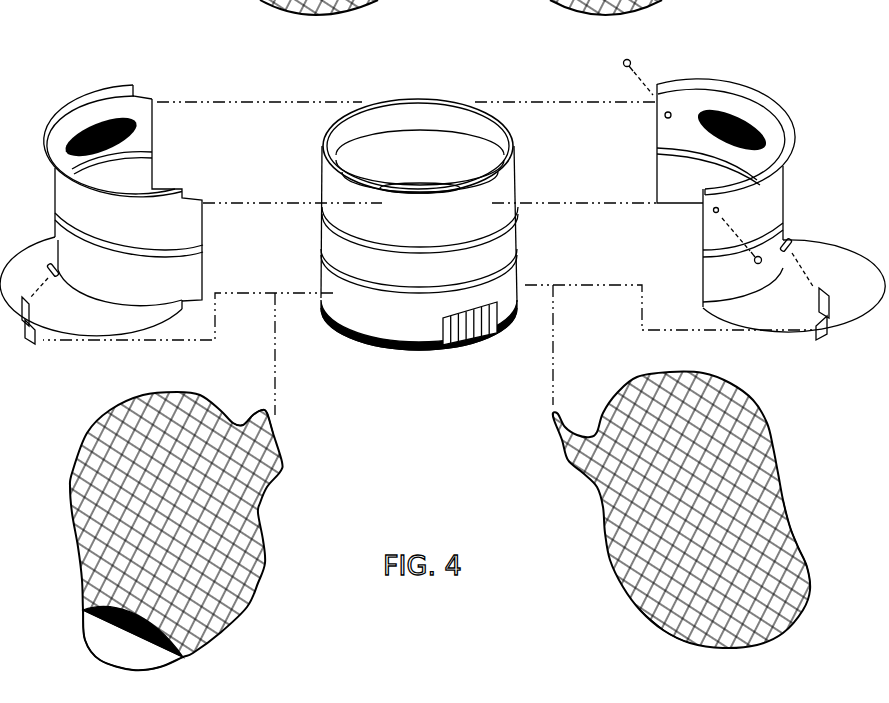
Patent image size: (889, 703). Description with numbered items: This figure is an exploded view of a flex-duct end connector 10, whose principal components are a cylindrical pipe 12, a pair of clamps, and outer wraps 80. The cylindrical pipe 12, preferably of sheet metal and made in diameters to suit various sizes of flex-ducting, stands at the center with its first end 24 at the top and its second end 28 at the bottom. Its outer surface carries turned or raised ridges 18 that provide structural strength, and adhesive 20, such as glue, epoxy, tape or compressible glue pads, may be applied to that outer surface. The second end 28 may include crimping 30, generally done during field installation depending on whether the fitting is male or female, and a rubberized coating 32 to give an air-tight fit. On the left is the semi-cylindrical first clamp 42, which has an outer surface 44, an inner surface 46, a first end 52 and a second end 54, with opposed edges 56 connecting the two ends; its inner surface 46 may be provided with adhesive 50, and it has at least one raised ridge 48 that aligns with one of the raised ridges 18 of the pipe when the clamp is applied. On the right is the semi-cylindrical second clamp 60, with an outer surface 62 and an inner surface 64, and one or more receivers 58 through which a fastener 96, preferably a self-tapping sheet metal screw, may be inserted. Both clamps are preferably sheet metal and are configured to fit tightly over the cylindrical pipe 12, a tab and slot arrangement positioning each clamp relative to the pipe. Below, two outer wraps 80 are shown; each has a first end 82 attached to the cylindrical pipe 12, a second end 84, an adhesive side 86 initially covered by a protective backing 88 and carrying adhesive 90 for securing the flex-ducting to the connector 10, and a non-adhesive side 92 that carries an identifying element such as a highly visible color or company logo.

The flex-duct end connector 10 is at (43, 42).
The cylindrical pipe 12 is at (425, 131).
The raised ridges 18 is at (442, 230).
The adhesive 20 is at (442, 267).
The first end 24 is at (418, 134).
The second end 28 is at (431, 331).
The crimping 30 is at (467, 340).
The rubberized coating 32 is at (419, 330).
The first clamp 42 is at (128, 115).
The outer surface 44 is at (108, 241).
The inner surface 46 is at (141, 164).
The raised ridge 48 is at (37, 202).
The adhesive 50 is at (80, 129).
The first end 52 is at (105, 130).
The second end 54 is at (91, 290).
The opposed edges 56 is at (219, 200).
The receivers 58 is at (650, 158).
The second clamp 60 is at (461, 8).
The outer surface 62 is at (794, 264).
The inner surface 64 is at (706, 148).
The outer wraps 80 is at (297, 544).
The first end 82 is at (395, 431).
The second end 84 is at (425, 521).
The adhesive side 86 is at (815, 545).
The protective backing 88 is at (184, 631).
The adhesive 90 is at (155, 645).
The non-adhesive side 92 is at (658, 637).
The fastener 96 is at (727, 148).